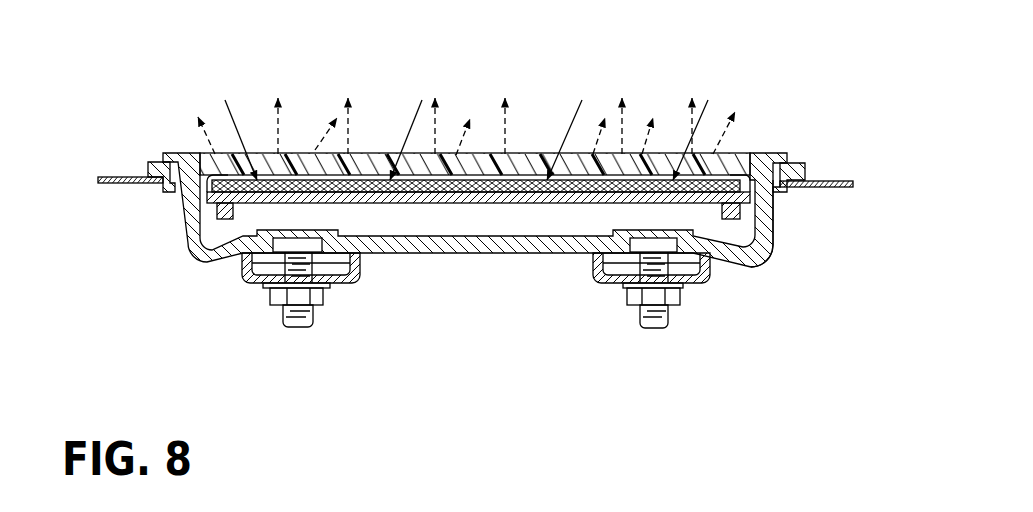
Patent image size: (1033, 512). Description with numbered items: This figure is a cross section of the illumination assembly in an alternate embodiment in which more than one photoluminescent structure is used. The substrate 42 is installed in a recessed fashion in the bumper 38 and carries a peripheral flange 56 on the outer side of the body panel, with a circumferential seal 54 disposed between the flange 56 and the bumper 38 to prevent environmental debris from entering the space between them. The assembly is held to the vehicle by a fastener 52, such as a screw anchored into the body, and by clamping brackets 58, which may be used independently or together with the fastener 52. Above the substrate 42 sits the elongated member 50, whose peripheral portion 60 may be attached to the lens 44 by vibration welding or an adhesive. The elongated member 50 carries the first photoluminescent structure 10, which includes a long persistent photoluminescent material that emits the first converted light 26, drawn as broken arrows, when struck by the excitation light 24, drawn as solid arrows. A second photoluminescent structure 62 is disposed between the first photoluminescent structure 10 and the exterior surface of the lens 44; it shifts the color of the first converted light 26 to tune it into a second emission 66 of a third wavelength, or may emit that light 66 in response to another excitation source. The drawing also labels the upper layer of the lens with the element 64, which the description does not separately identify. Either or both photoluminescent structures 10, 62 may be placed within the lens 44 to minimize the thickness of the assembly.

The photoluminescent structure 10 is at (249, 210).
The excitation light 24 is at (236, 115).
The converted light 26 is at (315, 150).
The bumper 38 is at (145, 180).
The substrate 42 is at (768, 235).
The lens 44 is at (738, 155).
The elongated member 50 is at (483, 204).
The fastener 52 is at (636, 314).
The seal 54 is at (138, 158).
The peripheral flange 56 is at (784, 152).
The clamping bracket 58 is at (247, 281).
The peripheral portion 60 is at (750, 210).
The second photoluminescent structure 62 is at (518, 196).
The cover lens 64 is at (530, 155).
The second photoluminescent structure 66 is at (503, 134).